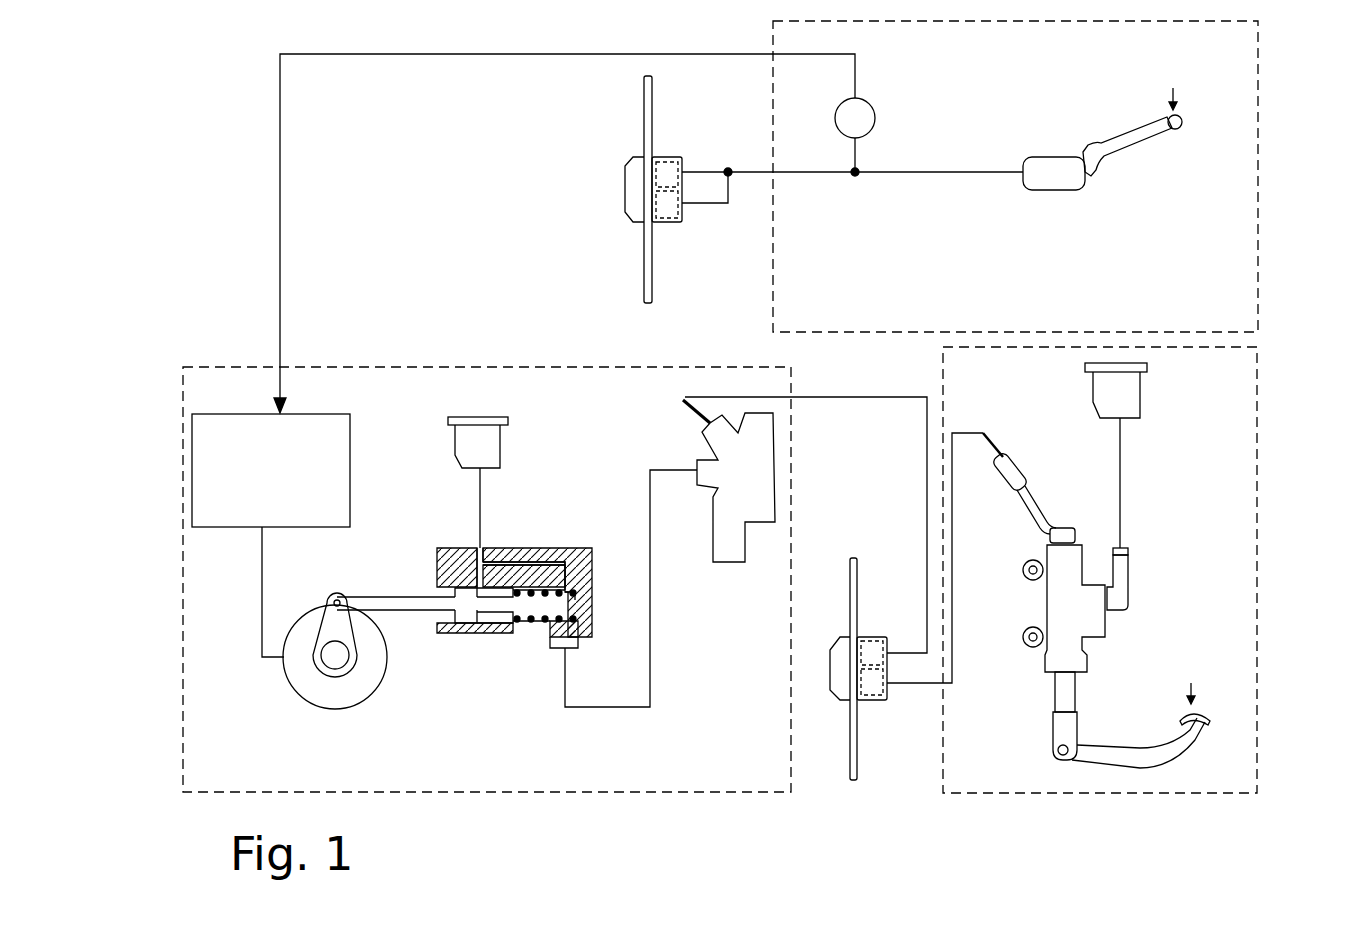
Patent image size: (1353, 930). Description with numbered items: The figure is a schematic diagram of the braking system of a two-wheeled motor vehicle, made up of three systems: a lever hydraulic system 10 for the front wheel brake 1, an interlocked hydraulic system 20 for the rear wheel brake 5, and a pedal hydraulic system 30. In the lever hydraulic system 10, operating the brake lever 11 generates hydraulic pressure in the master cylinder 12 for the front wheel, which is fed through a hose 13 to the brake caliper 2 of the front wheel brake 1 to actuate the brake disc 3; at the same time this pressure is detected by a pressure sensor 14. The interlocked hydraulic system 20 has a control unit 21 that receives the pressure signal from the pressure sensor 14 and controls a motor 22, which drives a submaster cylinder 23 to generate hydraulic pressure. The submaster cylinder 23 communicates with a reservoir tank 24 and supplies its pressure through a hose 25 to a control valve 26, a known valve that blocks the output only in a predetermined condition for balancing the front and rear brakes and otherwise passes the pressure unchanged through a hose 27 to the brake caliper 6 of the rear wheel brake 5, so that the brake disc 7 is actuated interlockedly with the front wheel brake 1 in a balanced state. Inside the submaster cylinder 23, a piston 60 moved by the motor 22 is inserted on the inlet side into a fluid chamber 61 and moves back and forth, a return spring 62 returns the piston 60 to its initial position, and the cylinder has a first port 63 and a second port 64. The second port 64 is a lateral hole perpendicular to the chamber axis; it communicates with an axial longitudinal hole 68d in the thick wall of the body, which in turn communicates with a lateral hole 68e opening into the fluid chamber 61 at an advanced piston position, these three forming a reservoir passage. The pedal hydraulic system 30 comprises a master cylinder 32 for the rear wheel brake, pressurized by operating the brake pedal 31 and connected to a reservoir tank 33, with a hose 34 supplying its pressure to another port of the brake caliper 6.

The front wheel brake 1 is at (604, 146).
The brake caliper 2 is at (664, 156).
The brake disc 3 is at (652, 105).
The rear wheel brake 5 is at (835, 714).
The brake caliper 6 is at (837, 664).
The brake disc 7 is at (855, 587).
The lever hydraulic system 10 is at (1257, 176).
The brake lever 11 is at (1135, 152).
The master cylinder 12 is at (1057, 190).
The hose 13 is at (945, 176).
The pressure sensor 14 is at (875, 112).
The interlocked hydraulic system 20 is at (549, 366).
The control unit 21 is at (348, 450).
The motor 22 is at (320, 693).
The submaster cylinder 23 is at (489, 610).
The reservoir tank 24 is at (498, 443).
The hose 25 is at (662, 470).
The control valve 26 is at (713, 530).
The hose 27 is at (880, 393).
The pedal hydraulic system 30 is at (1258, 410).
The brake pedal 31 is at (1186, 712).
The master cylinder 32 is at (1047, 607).
The reservoir tank 33 is at (1130, 410).
The hose 34 is at (965, 430).
The piston 60 is at (475, 608).
The fluid chamber 61 is at (525, 608).
The return spring 62 is at (532, 620).
The first port 63 is at (565, 650).
The second port 64 is at (580, 598).
The longitudinal hole 68d is at (503, 548).
The lateral hole 68e is at (448, 548).